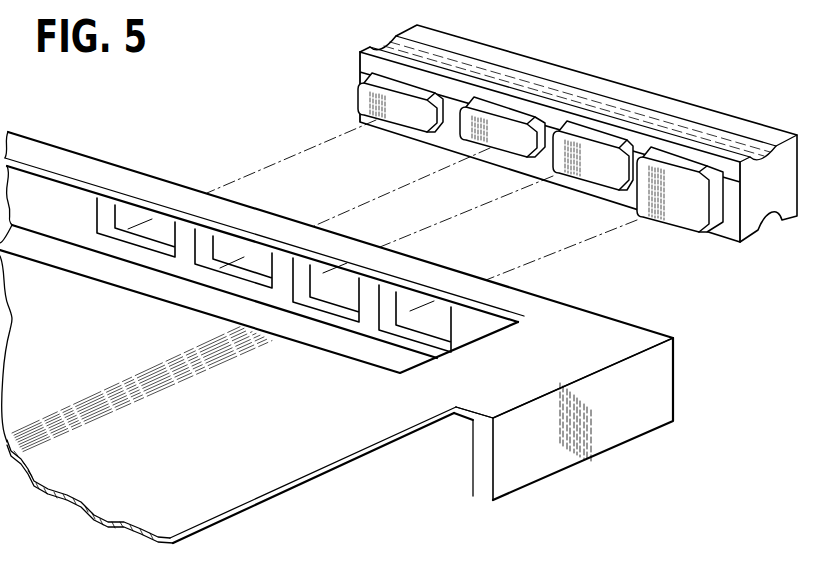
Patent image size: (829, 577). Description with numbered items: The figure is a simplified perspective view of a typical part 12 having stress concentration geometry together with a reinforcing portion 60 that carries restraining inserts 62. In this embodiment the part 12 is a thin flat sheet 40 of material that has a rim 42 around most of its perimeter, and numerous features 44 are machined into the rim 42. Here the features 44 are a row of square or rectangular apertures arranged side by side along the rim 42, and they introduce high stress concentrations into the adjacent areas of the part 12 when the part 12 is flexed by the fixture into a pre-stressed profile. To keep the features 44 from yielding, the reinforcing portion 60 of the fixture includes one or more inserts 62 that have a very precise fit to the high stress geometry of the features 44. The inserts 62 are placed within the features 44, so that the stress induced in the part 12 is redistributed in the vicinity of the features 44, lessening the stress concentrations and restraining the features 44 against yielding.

The part 12 is at (636, 450).
The thin flat sheet 40 is at (313, 481).
The rim 42 is at (658, 385).
The features 44 is at (225, 276).
The reinforcing portion 60 is at (656, 89).
The inserts 62 is at (492, 145).